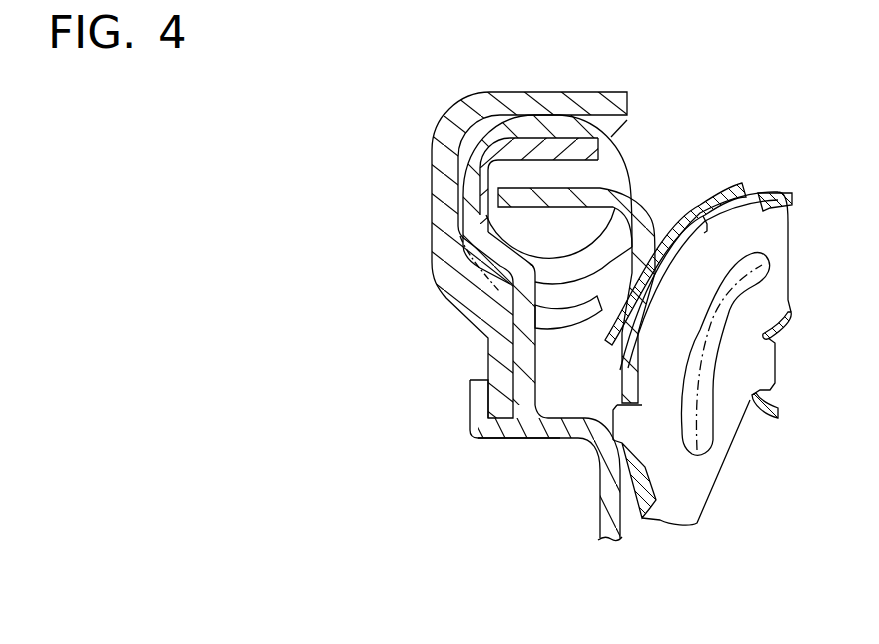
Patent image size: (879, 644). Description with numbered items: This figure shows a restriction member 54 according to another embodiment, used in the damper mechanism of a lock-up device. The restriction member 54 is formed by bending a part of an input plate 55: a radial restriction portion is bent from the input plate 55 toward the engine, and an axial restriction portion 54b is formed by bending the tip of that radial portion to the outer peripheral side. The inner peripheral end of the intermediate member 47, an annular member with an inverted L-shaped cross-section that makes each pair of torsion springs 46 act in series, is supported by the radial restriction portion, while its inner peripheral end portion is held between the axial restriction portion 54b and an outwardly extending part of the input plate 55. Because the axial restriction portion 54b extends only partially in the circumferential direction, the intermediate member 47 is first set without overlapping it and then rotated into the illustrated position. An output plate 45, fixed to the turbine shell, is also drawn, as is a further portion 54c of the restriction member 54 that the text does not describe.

The output plate 45 is at (594, 196).
The torsion springs 46 is at (620, 146).
The intermediate member 47 is at (473, 108).
The restriction member 54 is at (491, 459).
The axial restriction portion 54b is at (500, 430).
The clip hook portion 54c is at (478, 397).
The input plate 55 is at (607, 513).